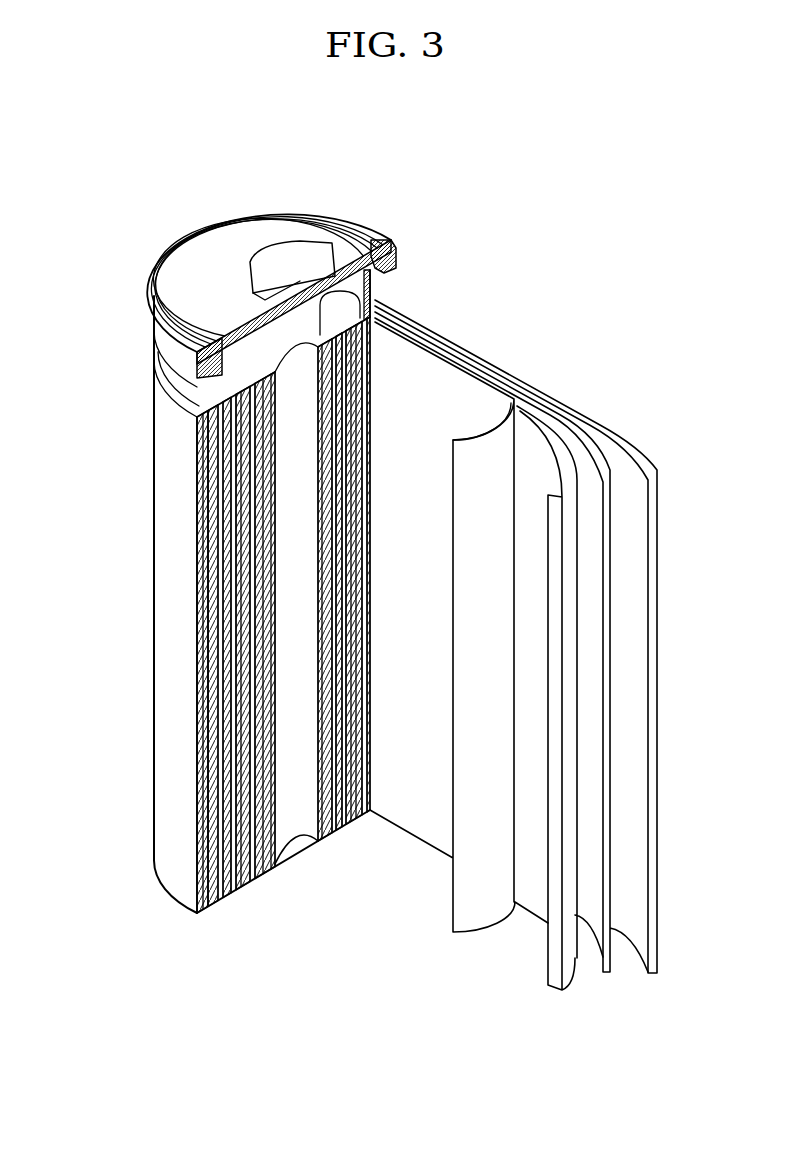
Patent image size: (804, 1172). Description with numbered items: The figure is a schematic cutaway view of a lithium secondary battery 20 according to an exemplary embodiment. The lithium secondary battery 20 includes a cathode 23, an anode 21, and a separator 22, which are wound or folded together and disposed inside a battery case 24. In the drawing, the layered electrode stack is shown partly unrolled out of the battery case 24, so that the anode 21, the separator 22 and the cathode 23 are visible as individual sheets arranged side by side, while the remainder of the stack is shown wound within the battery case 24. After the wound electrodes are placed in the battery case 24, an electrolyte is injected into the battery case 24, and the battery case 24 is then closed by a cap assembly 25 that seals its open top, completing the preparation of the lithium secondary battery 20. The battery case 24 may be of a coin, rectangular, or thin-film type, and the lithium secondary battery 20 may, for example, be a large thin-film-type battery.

The lithium secondary battery 20 is at (482, 240).
The anode 21 is at (645, 462).
The separator 22 is at (460, 367).
The cathode 23 is at (537, 417).
The battery case 24 is at (165, 603).
The cap assembly 25 is at (273, 253).